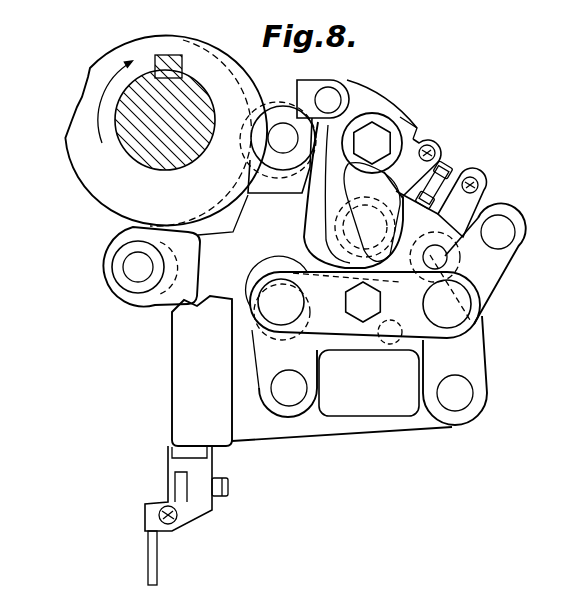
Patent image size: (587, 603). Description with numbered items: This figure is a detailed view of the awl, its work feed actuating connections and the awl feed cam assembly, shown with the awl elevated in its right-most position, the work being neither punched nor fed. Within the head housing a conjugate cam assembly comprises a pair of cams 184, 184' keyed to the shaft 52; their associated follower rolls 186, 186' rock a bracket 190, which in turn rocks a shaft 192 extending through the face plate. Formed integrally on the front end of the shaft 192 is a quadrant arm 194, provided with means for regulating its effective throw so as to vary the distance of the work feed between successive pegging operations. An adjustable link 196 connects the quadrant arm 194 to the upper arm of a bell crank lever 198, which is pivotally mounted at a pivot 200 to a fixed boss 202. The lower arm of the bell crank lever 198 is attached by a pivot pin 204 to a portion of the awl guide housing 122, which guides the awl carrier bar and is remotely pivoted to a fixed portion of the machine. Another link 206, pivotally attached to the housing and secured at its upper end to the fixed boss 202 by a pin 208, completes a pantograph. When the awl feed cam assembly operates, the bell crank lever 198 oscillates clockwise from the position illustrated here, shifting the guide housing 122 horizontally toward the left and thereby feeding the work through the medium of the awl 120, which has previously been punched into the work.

The shaft 52 is at (150, 160).
The awl 120 is at (158, 566).
The guide housing 122 is at (357, 430).
The cam 184 is at (166, 117).
The cam 184' is at (209, 121).
The follower roll 186 is at (273, 150).
The follower roll 186' is at (120, 267).
The bracket 190 is at (243, 277).
The shaft 192 is at (306, 232).
The quadrant arm 194 is at (359, 105).
The adjustable link 196 is at (480, 186).
The bell crank lever 198 is at (482, 279).
The pivot 200 is at (458, 313).
The fixed boss 202 is at (354, 352).
The pivot pin 204 is at (470, 393).
The link 206 is at (257, 371).
The pin 208 is at (270, 305).